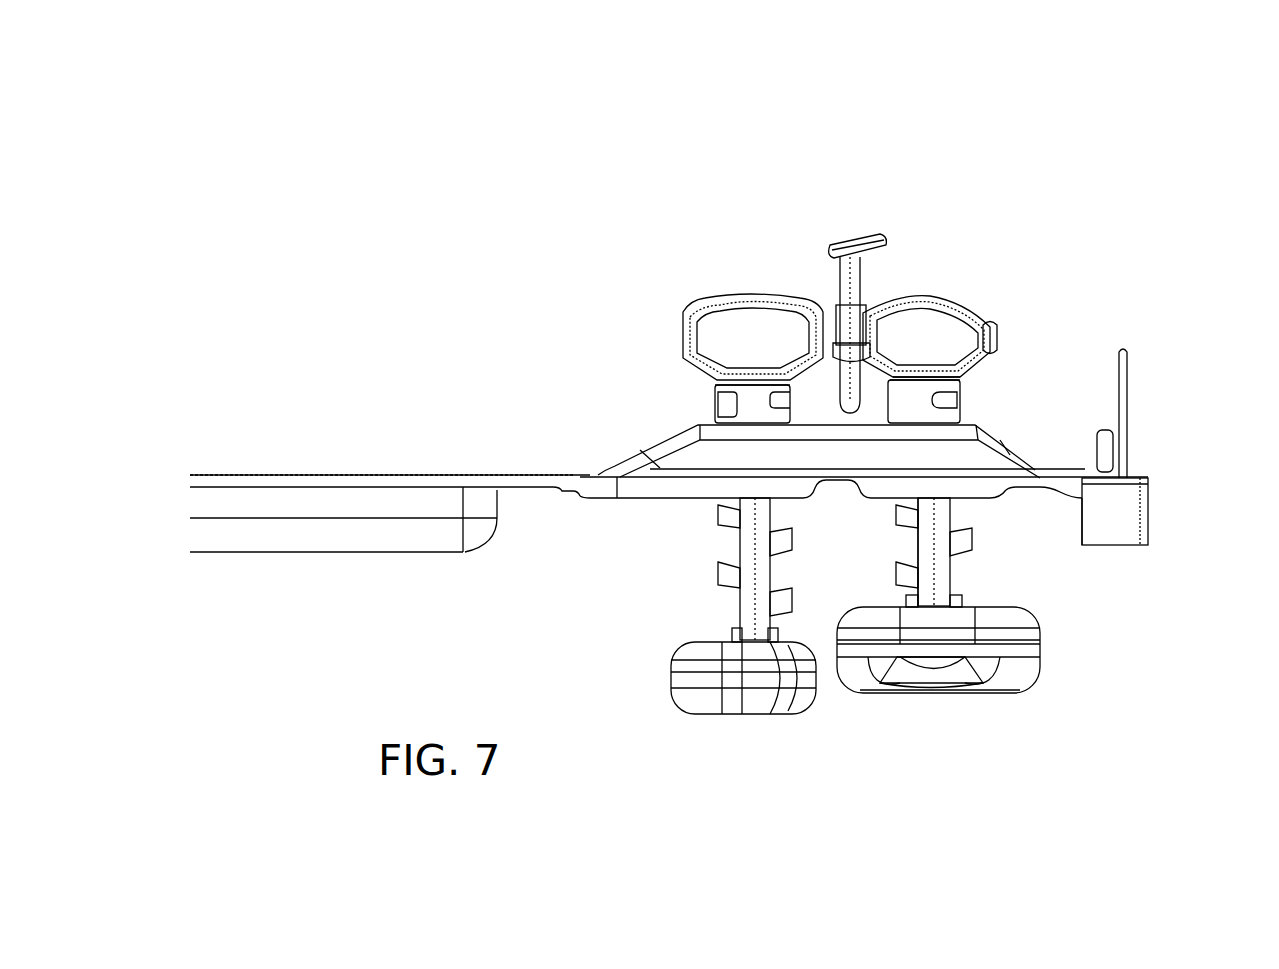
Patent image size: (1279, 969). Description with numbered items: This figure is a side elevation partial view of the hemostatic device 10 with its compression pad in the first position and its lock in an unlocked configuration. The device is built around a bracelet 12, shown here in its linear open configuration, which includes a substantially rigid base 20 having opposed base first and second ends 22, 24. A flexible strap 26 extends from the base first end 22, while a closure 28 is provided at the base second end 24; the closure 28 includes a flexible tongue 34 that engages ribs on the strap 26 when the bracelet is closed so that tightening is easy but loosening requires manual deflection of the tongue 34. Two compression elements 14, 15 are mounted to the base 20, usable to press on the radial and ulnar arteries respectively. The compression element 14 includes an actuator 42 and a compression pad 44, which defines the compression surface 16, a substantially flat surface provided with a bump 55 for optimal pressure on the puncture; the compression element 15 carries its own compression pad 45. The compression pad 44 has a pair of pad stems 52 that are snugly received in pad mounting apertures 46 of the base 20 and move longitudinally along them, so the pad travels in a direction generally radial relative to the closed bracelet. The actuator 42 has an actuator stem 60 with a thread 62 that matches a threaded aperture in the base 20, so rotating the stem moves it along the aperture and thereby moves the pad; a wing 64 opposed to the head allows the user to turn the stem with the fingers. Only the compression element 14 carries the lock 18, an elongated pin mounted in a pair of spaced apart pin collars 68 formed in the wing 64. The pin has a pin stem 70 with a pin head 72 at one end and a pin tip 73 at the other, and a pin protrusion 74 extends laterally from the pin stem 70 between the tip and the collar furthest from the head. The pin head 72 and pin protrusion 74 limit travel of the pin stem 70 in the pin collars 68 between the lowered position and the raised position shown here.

The hemostatic device 10 is at (580, 148).
The bracelet 12 is at (449, 418).
The compression element 14 is at (929, 278).
The compression element 15 is at (697, 298).
The compression surface 16 is at (990, 690).
The lock 18 is at (853, 222).
The base 20 is at (722, 502).
The base first end 22 is at (625, 485).
The base second end 24 is at (1085, 545).
The strap 26 is at (326, 474).
The closure 28 is at (1152, 485).
The tongue 34 is at (1127, 362).
The actuator 42 is at (997, 335).
The compression pad 44 is at (1012, 683).
The compression pad 45 is at (797, 707).
The pad mounting apertures 46 is at (963, 423).
The pad stems 52 is at (927, 563).
The bump 55 is at (935, 700).
The actuator stem 60 is at (907, 537).
The thread 62 is at (957, 547).
The wing 64 is at (962, 300).
The pin collars 68 is at (853, 348).
The pin stem 70 is at (857, 280).
The pin head 72 is at (850, 240).
The pin tip 73 is at (858, 403).
The pin protrusion 74 is at (850, 363).